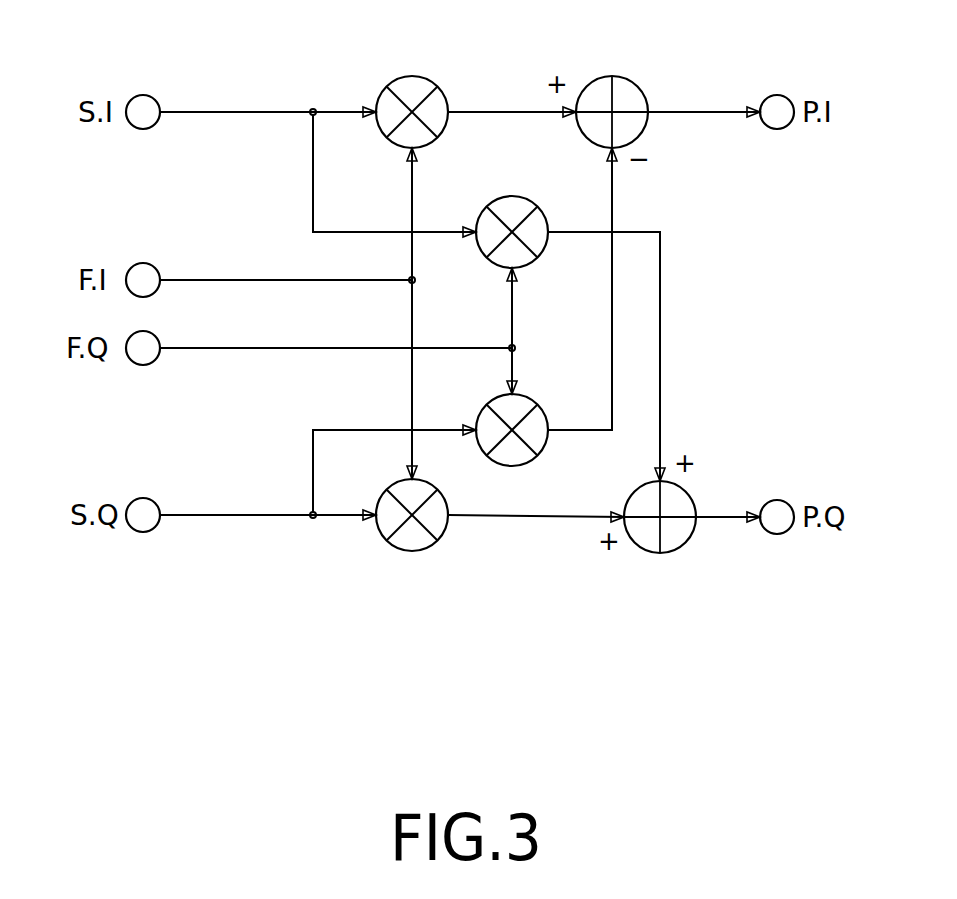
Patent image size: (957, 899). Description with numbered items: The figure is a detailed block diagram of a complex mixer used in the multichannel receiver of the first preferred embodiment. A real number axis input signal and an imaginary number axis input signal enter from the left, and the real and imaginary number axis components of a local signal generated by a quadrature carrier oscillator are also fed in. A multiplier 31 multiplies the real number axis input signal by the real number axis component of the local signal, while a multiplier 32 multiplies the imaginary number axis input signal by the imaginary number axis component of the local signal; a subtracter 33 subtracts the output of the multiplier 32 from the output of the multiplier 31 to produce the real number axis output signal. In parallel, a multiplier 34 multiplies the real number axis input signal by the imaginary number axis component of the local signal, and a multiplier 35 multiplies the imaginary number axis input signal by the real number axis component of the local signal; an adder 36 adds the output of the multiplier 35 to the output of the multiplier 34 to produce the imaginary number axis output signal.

The multiplier 31 is at (412, 76).
The multiplier 32 is at (537, 403).
The subtracter 33 is at (612, 76).
The multiplier 34 is at (538, 258).
The multiplier 35 is at (412, 551).
The adder 36 is at (660, 553).